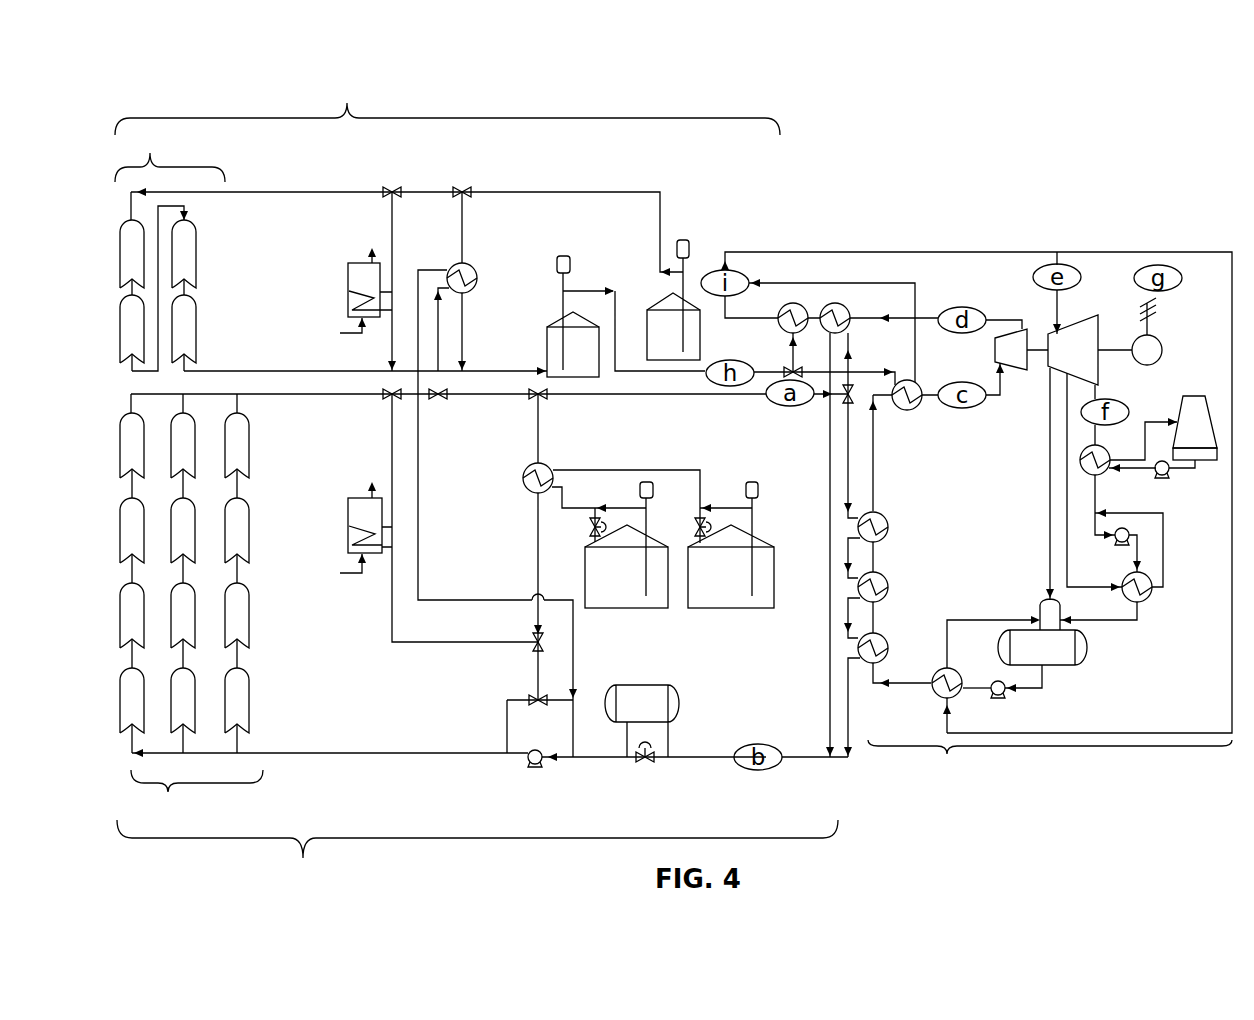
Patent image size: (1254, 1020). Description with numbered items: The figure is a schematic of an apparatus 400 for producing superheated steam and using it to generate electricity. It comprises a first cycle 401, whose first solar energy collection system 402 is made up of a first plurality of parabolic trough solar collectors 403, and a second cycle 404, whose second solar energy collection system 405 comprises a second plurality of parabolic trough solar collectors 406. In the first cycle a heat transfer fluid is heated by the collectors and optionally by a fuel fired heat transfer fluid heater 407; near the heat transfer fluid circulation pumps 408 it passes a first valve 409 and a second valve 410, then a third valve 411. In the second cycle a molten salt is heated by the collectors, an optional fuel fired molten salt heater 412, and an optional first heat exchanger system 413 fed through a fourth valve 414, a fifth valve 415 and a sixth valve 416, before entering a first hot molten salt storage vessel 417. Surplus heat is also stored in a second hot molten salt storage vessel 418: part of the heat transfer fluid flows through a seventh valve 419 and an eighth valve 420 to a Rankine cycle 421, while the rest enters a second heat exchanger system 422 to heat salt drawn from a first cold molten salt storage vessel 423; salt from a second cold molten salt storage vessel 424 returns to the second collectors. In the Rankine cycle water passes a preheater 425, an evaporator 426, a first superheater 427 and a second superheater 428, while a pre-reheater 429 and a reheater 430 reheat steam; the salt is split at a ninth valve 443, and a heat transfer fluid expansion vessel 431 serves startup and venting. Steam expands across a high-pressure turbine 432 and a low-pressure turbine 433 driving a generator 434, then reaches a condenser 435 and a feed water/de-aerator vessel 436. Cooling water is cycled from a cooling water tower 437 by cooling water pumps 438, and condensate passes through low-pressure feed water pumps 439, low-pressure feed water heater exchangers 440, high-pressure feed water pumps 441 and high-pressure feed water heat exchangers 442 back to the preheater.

The apparatus 400 is at (183, 68).
The first cycle 401 is at (477, 855).
The first solar energy collection system 402 is at (210, 621).
The first plurality of parabolic trough solar collectors 403 is at (258, 442).
The second cycle 404 is at (447, 103).
The second solar energy collection system 405 is at (188, 249).
The second plurality of parabolic trough solar collectors 406 is at (197, 238).
The fuel fired heat transfer fluid heater 407 is at (348, 520).
The heat transfer fluid circulation pumps 408 is at (540, 765).
The first valve 409 is at (532, 698).
The second valve 410 is at (532, 648).
The third valve 411 is at (390, 400).
The fuel fired molten salt heater 412 is at (348, 288).
The first heat exchanger system 413 is at (480, 283).
The fourth valve 414 is at (390, 185).
The fifth valve 415 is at (440, 400).
The sixth valve 416 is at (465, 185).
The first hot molten salt storage vessel 417 is at (545, 352).
The second hot molten salt storage vessel 418 is at (775, 565).
The seventh valve 419 is at (542, 400).
The eighth valve 420 is at (845, 402).
The Rankine cycle 421 is at (1050, 761).
The second heat exchanger system 422 is at (522, 478).
The first cold molten salt storage vessel 423 is at (600, 610).
The second cold molten salt storage vessel 424 is at (645, 330).
The preheater 425 is at (888, 645).
The evaporator 426 is at (888, 582).
The first superheater 427 is at (888, 522).
The second superheater 428 is at (912, 410).
The pre-reheater 429 is at (852, 323).
The reheater 430 is at (792, 300).
The heat transfer fluid expansion vessel 431 is at (696, 700).
The high-pressure turbine 432 is at (1012, 365).
The low-pressure turbine 433 is at (1078, 320).
The generator 434 is at (1162, 352).
The condenser 435 is at (1100, 475).
The feed water/de-aerator vessel 436 is at (1090, 648).
The cooling water tower 437 is at (1173, 415).
The cooling water pumps 438 is at (1165, 475).
The low-pressure feed water pumps 439 is at (1121, 545).
The low-pressure feed water heater exchangers 440 is at (1145, 600).
The high-pressure feed water pumps 441 is at (1000, 698).
The high-pressure feed water heat exchangers 442 is at (934, 690).
The ninth valve 443 is at (790, 366).